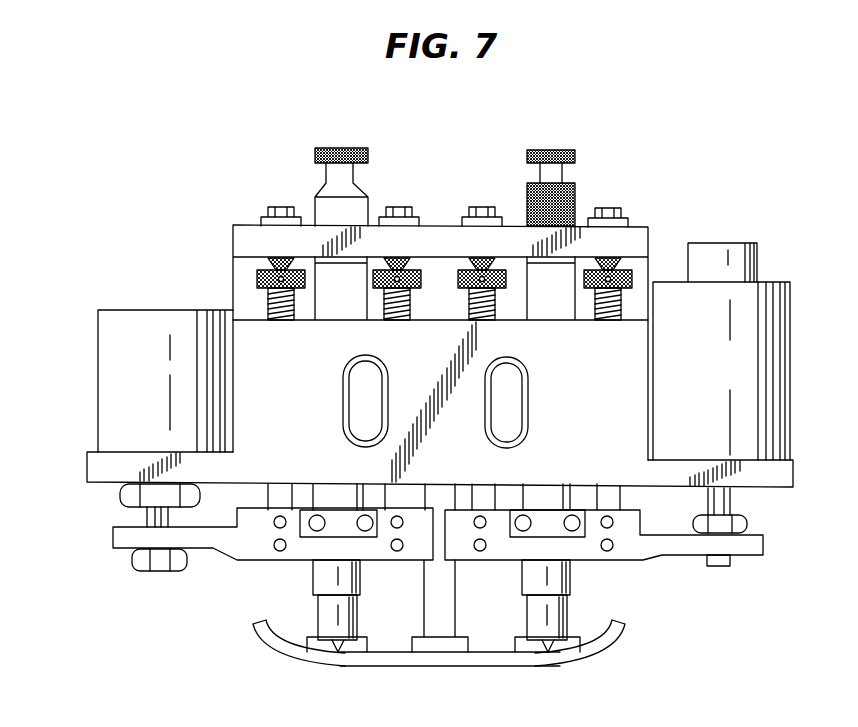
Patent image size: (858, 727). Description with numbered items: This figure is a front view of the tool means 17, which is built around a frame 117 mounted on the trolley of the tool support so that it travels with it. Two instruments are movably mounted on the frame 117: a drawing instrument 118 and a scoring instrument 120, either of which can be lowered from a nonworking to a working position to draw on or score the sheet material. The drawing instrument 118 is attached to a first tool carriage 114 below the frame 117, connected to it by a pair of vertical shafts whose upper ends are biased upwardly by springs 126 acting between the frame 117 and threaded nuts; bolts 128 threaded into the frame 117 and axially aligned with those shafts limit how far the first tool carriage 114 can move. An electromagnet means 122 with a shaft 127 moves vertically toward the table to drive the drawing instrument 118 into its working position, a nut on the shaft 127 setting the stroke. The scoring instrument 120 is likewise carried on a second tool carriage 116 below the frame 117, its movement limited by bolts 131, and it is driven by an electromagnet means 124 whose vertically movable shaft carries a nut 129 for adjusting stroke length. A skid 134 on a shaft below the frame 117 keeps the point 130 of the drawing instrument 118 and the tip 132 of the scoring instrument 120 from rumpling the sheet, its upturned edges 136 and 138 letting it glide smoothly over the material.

The tool means 17 is at (668, 178).
The first tool carriage 114 is at (258, 540).
The second tool carriage 116 is at (640, 547).
The frame 117 is at (630, 423).
The drawing instrument 118 is at (320, 200).
The scoring instrument 120 is at (557, 288).
The electromagnet means 122 is at (112, 330).
The electromagnet means 124 is at (762, 343).
The biasing means 126 is at (256, 295).
The shaft 127 is at (143, 560).
The limiting means 128 is at (266, 208).
The nut 129 is at (747, 524).
The point 130 is at (331, 651).
The limiting means 131 is at (481, 208).
The tip 132 is at (553, 651).
The skid 134 is at (405, 658).
The upturned edge 136 is at (267, 635).
The upturned edge 138 is at (608, 643).